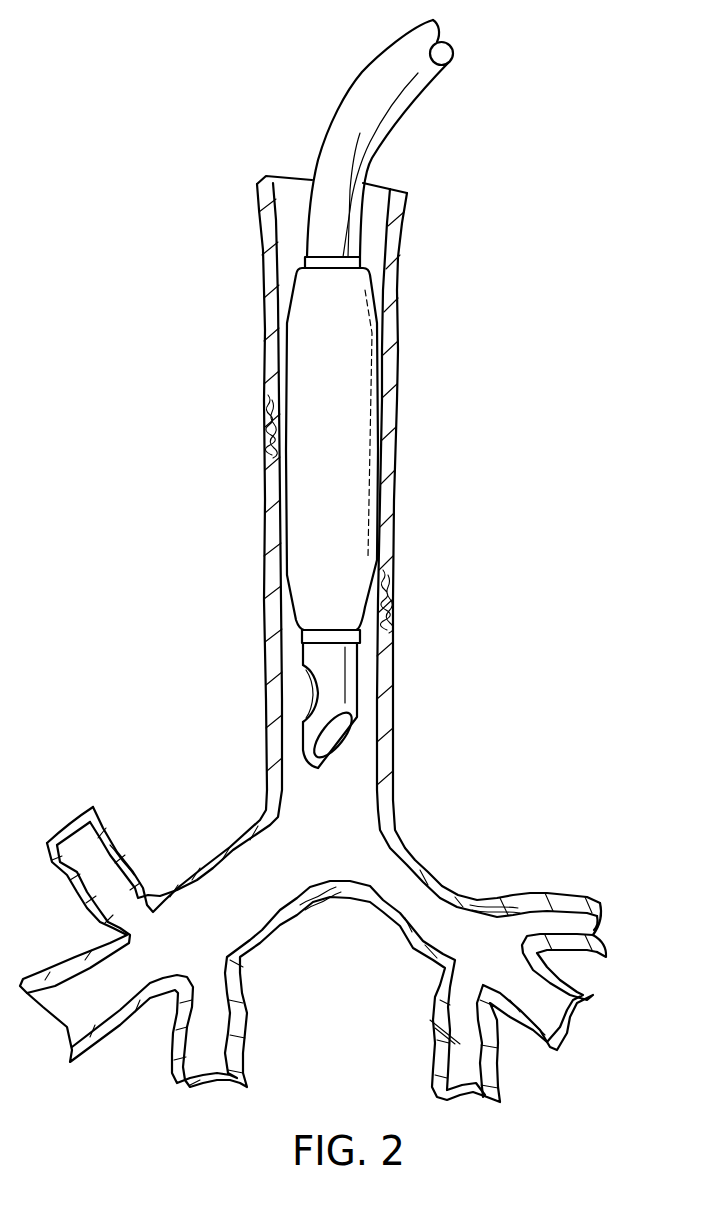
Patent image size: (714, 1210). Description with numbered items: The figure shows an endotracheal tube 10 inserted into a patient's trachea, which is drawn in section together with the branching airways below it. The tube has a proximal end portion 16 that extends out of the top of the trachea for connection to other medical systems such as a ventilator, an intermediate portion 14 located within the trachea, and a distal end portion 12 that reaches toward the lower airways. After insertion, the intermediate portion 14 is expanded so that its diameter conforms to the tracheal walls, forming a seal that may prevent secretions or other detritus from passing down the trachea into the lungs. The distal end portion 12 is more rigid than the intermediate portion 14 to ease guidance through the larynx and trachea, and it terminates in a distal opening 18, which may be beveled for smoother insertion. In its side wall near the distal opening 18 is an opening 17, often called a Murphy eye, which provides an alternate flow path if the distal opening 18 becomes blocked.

The endotracheal tube 10 is at (166, 72).
The distal end portion 12 is at (360, 667).
The intermediate portion 14 is at (293, 357).
The proximal end portion 16 is at (338, 93).
The opening 17 is at (310, 703).
The distal opening 18 is at (342, 747).